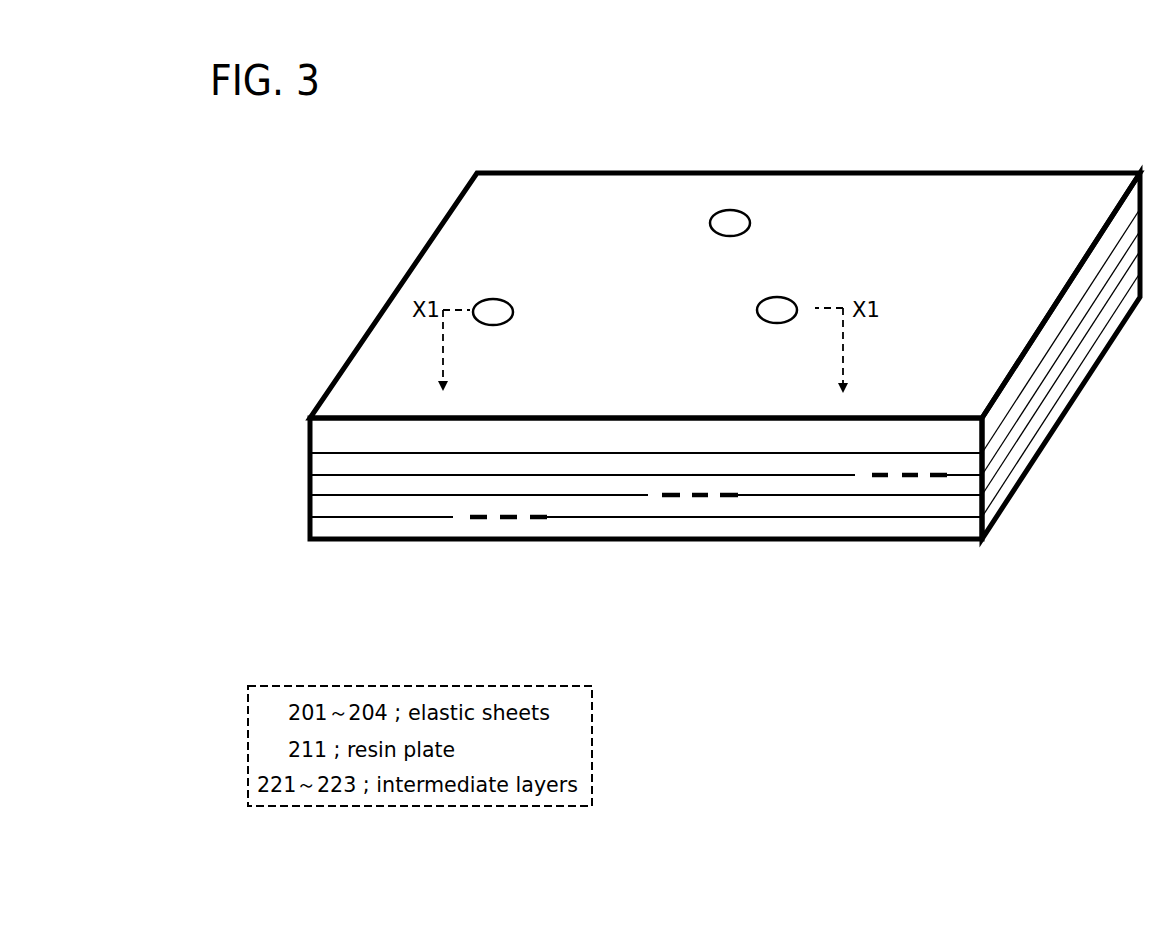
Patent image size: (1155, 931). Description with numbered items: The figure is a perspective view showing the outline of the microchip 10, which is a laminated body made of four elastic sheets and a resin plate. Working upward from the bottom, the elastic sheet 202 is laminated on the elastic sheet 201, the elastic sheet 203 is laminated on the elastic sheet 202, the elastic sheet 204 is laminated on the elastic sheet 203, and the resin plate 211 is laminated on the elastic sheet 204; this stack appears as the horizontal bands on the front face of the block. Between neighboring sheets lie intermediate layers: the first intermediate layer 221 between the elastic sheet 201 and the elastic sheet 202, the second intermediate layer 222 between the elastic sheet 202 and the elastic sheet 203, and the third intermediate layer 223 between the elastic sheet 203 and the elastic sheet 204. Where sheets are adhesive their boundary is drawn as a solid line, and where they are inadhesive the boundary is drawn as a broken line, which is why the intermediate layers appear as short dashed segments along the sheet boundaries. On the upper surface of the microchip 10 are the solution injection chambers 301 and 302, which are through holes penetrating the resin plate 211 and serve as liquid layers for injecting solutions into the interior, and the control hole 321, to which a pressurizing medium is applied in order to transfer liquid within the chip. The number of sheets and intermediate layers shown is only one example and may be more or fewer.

The microchip 10 is at (1054, 155).
The elastic sheet 201 is at (335, 527).
The elastic sheet 202 is at (332, 506).
The elastic sheet 203 is at (327, 484).
The elastic sheet 204 is at (325, 462).
The resin plate 211 is at (337, 435).
The first intermediate layer 221 is at (512, 522).
The second intermediate layer 222 is at (707, 500).
The third intermediate layer 223 is at (925, 478).
The solution injection chamber 301 is at (500, 306).
The solution injection chamber 302 is at (742, 218).
The control hole 321 is at (785, 305).